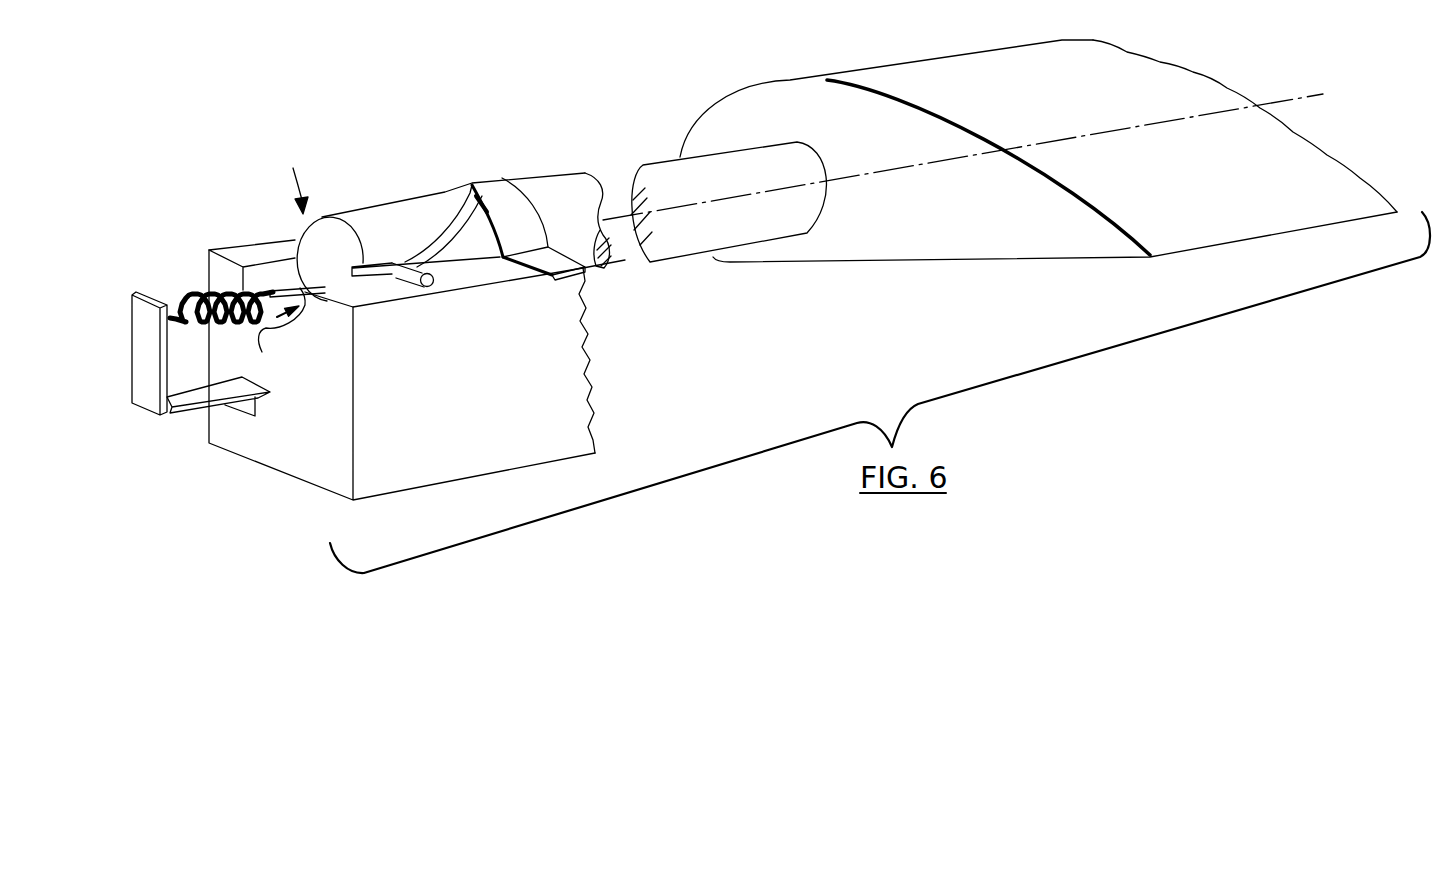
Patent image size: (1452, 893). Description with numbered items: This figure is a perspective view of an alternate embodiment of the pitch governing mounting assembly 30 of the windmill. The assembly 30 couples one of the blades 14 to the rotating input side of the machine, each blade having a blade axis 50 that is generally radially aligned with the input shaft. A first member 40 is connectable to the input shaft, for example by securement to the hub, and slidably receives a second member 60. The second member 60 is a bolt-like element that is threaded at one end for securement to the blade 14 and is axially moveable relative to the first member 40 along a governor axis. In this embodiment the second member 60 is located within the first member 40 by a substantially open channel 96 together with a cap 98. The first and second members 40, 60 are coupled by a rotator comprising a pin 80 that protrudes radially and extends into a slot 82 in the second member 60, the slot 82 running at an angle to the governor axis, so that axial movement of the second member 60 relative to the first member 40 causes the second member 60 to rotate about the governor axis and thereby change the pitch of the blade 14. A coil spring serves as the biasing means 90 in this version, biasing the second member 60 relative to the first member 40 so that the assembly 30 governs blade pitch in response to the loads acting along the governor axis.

The blade 14 is at (1207, 221).
The pitch governing mounting assembly 30 is at (289, 175).
The first member 40 is at (455, 457).
The blade axis 50 is at (1276, 104).
The second member 60 is at (377, 221).
The pin 80 is at (429, 286).
The slot 82 is at (465, 233).
The biasing means 90 is at (200, 297).
The open channel 96 is at (282, 332).
The cap 98 is at (522, 202).